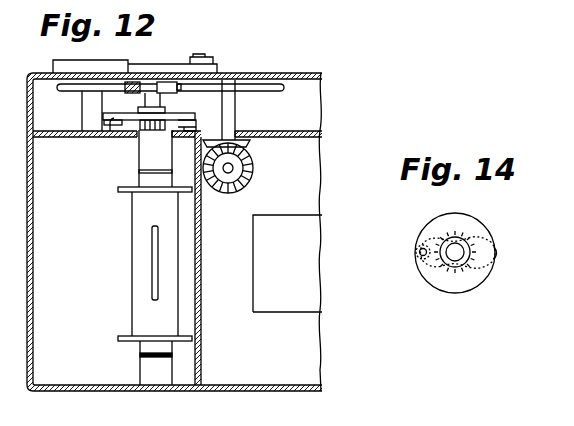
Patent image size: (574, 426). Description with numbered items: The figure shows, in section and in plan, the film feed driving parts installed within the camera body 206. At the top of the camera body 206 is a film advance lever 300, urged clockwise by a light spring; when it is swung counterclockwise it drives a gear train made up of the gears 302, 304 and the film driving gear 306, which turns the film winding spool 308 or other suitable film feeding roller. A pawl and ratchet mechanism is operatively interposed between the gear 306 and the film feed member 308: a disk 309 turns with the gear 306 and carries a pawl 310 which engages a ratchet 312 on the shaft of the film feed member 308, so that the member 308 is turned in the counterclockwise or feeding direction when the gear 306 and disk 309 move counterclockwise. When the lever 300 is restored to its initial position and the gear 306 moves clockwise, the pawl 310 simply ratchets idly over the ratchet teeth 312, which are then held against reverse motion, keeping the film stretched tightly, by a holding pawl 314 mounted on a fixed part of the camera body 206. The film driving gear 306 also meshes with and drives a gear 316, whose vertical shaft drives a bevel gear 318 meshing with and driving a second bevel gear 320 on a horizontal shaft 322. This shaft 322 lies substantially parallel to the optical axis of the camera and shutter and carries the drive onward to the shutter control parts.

In FIG. 12, the camera body 206 is at (32, 241).
In FIG. 12, the film advance lever 300 is at (147, 64).
In FIG. 12, the gear 302 is at (64, 92).
In FIG. 12, the gear 304 is at (132, 94).
In FIG. 12, the film driving gear 306 is at (168, 93).
In FIG. 12, the film winding spool 308 is at (134, 224).
In FIG. 12, the disk 309 is at (120, 114).
In FIG. 14, the disk 309 is at (473, 289).
In FIG. 12, the pawl 310 is at (111, 134).
In FIG. 14, the pawl 310 is at (428, 265).
In FIG. 12, the ratchet 312 is at (158, 131).
In FIG. 14, the ratchet 312 is at (453, 238).
In FIG. 12, the holding pawl 314 is at (188, 120).
In FIG. 14, the holding pawl 314 is at (489, 240).
In FIG. 12, the gear 316 is at (262, 92).
In FIG. 12, the bevel gear 318 is at (252, 144).
In FIG. 12, the second bevel gear 320 is at (254, 168).
In FIG. 12, the horizontal shaft 322 is at (227, 174).